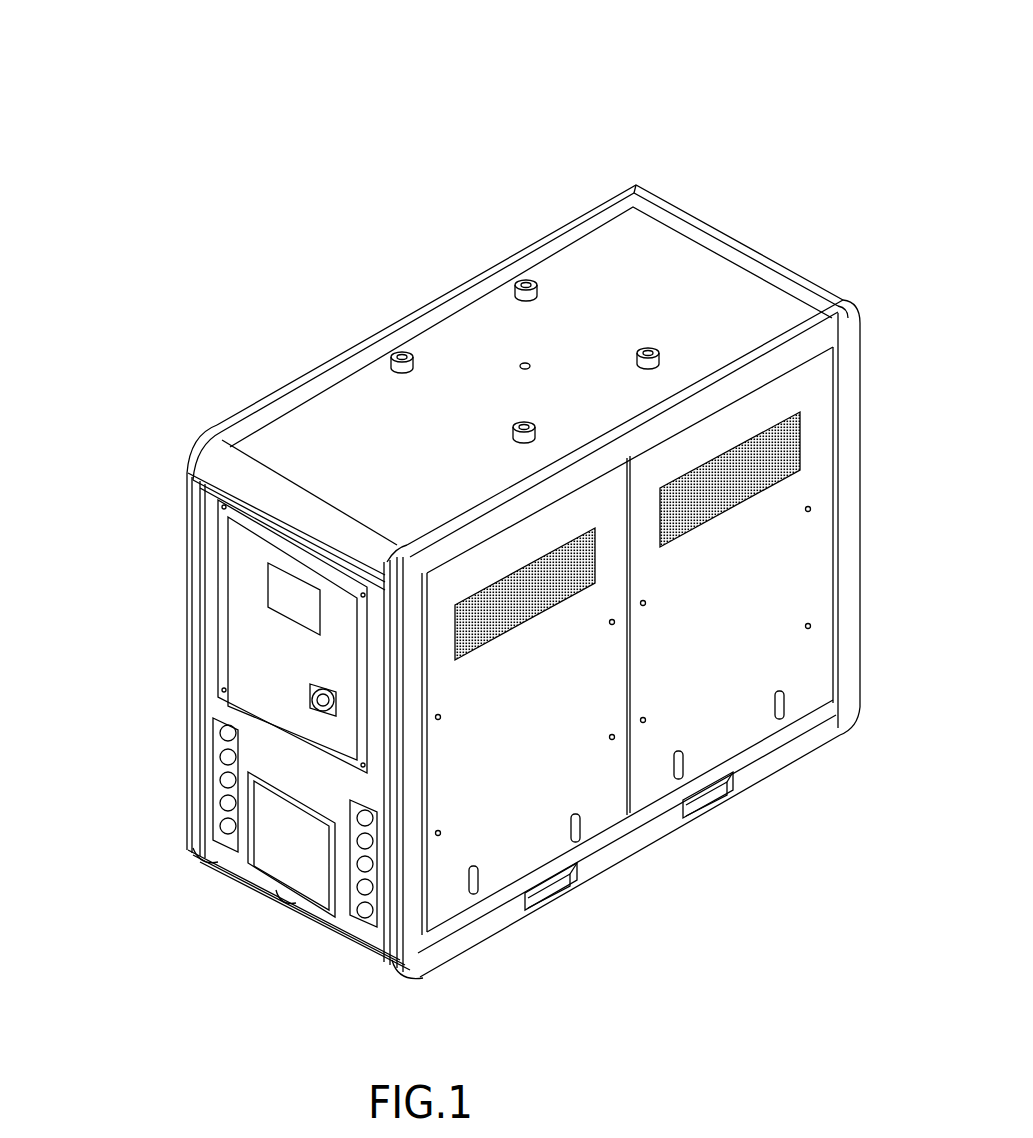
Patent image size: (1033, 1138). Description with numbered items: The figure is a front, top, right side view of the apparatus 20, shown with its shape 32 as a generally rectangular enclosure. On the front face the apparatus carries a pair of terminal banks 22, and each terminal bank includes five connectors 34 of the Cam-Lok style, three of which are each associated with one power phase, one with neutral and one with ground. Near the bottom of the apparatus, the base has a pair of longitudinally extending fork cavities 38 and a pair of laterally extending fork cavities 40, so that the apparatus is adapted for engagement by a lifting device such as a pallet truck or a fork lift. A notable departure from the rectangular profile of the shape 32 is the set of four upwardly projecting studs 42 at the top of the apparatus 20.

The apparatus 20 is at (572, 140).
The terminal bank 22 is at (405, 828).
The shape 32 is at (207, 378).
The connector 34 is at (225, 733).
The longitudinally extending fork cavity 38 is at (228, 868).
The laterally extending fork cavity 40 is at (717, 815).
The upwardly projecting stud 42 is at (526, 283).